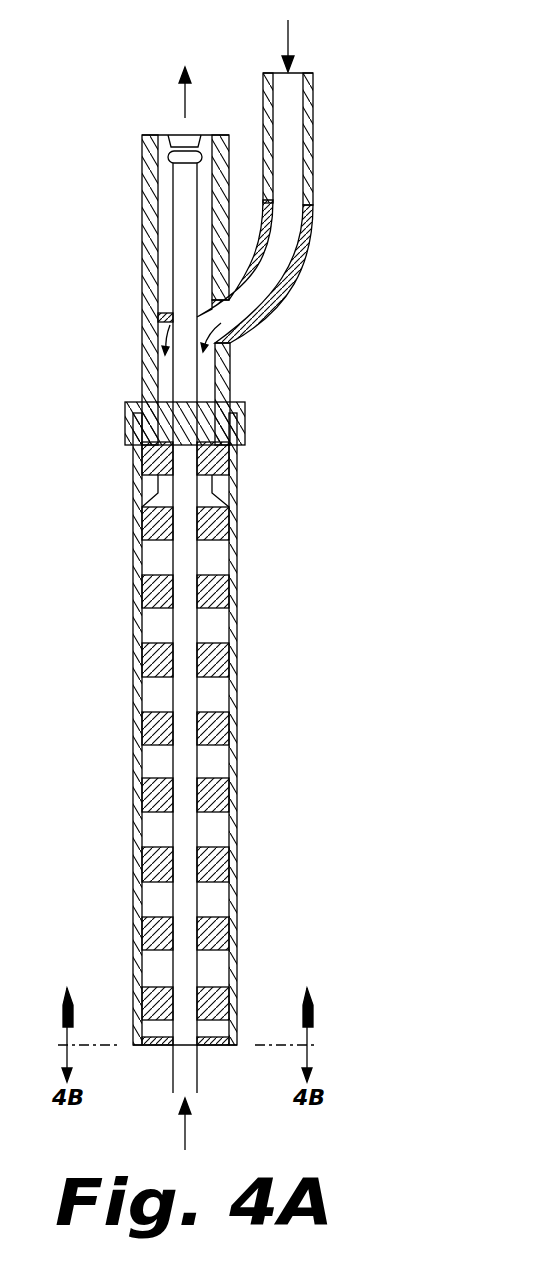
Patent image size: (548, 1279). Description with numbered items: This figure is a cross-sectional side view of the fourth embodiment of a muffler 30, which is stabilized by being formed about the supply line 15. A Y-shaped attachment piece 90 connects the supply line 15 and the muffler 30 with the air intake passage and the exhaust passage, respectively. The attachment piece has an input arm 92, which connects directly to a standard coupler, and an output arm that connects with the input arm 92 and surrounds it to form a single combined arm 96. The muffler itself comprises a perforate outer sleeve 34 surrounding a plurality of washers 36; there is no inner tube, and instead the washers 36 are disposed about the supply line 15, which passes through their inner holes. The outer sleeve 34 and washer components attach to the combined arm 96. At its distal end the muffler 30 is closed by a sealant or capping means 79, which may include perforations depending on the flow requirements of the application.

The supply line 15 is at (185, 213).
The muffler 30 is at (278, 585).
The perforate outer sleeve 34 is at (236, 633).
The washers 36 is at (215, 862).
The sealant or capping means 79 is at (220, 1047).
The Y-shaped attachment piece 90 is at (333, 221).
The input arm 92 is at (313, 115).
The combined arm 96 is at (247, 403).